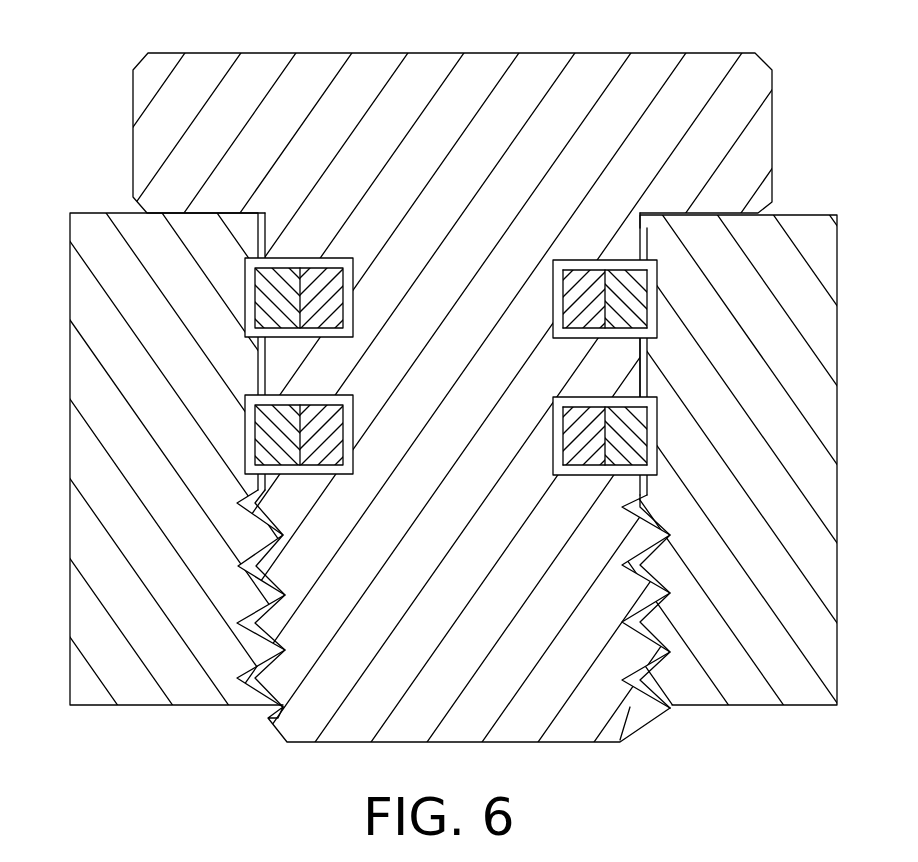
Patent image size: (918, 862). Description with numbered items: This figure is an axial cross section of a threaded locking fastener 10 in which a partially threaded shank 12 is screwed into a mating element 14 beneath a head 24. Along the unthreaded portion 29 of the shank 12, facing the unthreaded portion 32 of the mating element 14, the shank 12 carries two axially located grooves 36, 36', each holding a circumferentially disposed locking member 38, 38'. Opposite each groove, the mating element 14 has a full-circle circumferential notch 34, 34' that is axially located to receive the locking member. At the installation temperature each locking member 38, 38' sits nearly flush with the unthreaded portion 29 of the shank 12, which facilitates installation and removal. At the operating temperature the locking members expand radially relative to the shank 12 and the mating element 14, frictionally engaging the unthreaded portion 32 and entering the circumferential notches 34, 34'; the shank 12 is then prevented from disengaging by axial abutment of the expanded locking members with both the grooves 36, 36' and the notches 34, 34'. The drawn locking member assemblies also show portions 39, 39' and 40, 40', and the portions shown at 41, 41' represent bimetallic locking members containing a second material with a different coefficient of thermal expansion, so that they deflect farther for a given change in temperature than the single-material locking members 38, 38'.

The sealed threaded fastener assembly 10 is at (459, 380).
The threaded shank 12 is at (457, 615).
The mating element 14 is at (155, 545).
The bolt head 24 is at (772, 118).
The unthreaded portion of the shank 29 is at (648, 348).
The unthreaded portion of the mating element 32 is at (647, 380).
The circumferential notch 34 is at (445, 449).
The circumferential notch 34' is at (287, 297).
The groove 36 is at (598, 440).
The groove 36' is at (602, 297).
The locking member 38 is at (566, 438).
The locking member 38' is at (558, 304).
The groove bottom wall 39 is at (571, 491).
The groove bottom wall 39' is at (566, 352).
The seal backing ring 40 is at (633, 436).
The seal backing ring 40' is at (635, 292).
The bimetallic locking member 41 is at (605, 393).
The bimetallic locking member 41' is at (605, 251).